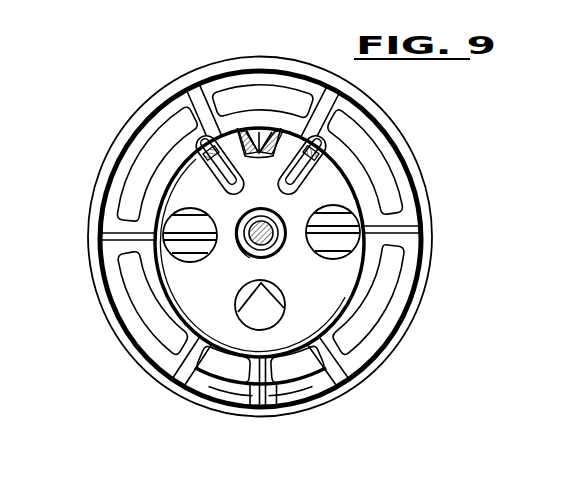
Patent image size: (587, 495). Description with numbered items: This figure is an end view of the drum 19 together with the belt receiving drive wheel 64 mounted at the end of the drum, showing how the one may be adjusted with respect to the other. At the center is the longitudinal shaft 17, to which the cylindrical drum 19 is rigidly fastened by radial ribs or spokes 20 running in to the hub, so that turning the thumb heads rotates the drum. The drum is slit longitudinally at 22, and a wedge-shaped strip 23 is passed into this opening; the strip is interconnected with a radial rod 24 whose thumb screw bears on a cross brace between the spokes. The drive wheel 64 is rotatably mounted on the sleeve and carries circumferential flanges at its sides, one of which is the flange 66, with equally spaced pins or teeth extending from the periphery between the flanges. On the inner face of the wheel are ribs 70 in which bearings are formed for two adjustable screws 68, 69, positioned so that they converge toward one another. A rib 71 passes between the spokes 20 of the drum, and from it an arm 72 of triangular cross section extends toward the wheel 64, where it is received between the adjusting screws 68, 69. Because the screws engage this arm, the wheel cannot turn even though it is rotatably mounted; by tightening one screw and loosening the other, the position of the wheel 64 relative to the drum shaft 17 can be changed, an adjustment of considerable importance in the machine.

The longitudinal shaft 17 is at (270, 247).
The drum 19 is at (372, 345).
The radial ribs or spokes 20 is at (338, 347).
The longitudinal slit 22 is at (285, 398).
The wedge-shaped strip 23 is at (255, 408).
The radial rod 24 is at (262, 362).
The drive wheel 64 is at (355, 200).
The circumferential flange 66 is at (410, 242).
The adjustable screw 68 is at (213, 158).
The adjustable screw 69 is at (308, 158).
The ribs 70 is at (237, 140).
The rib 71 is at (263, 128).
The arm of triangular cross section 72 is at (258, 157).